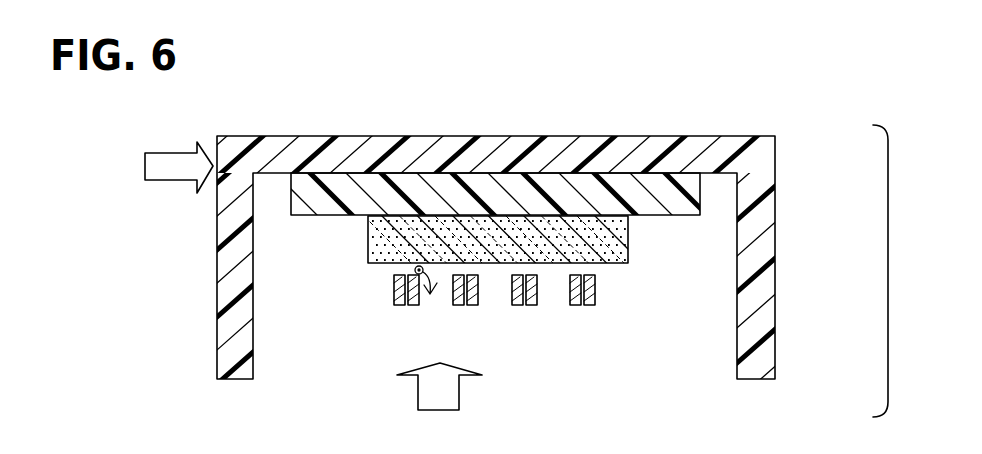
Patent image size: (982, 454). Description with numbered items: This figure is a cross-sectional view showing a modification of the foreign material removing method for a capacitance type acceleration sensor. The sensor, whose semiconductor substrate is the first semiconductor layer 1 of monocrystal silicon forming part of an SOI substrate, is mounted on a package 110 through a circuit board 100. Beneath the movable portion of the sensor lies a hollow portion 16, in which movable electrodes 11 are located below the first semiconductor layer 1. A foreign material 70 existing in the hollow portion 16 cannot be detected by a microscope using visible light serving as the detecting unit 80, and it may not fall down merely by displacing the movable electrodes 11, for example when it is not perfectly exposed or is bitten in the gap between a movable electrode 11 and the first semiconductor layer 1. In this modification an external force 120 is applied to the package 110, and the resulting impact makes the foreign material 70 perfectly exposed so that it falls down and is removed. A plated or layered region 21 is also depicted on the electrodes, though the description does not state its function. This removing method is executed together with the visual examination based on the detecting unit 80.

The first semiconductor layer 1 is at (593, 237).
The movable electrode 11 is at (597, 305).
The hollow portion 16 is at (554, 324).
The solder plating layer 21 is at (577, 305).
The foreign material 70 is at (413, 270).
The detecting unit 80 is at (430, 388).
The circuit board 100 is at (345, 195).
The package 110 is at (757, 208).
The external force 120 is at (182, 170).